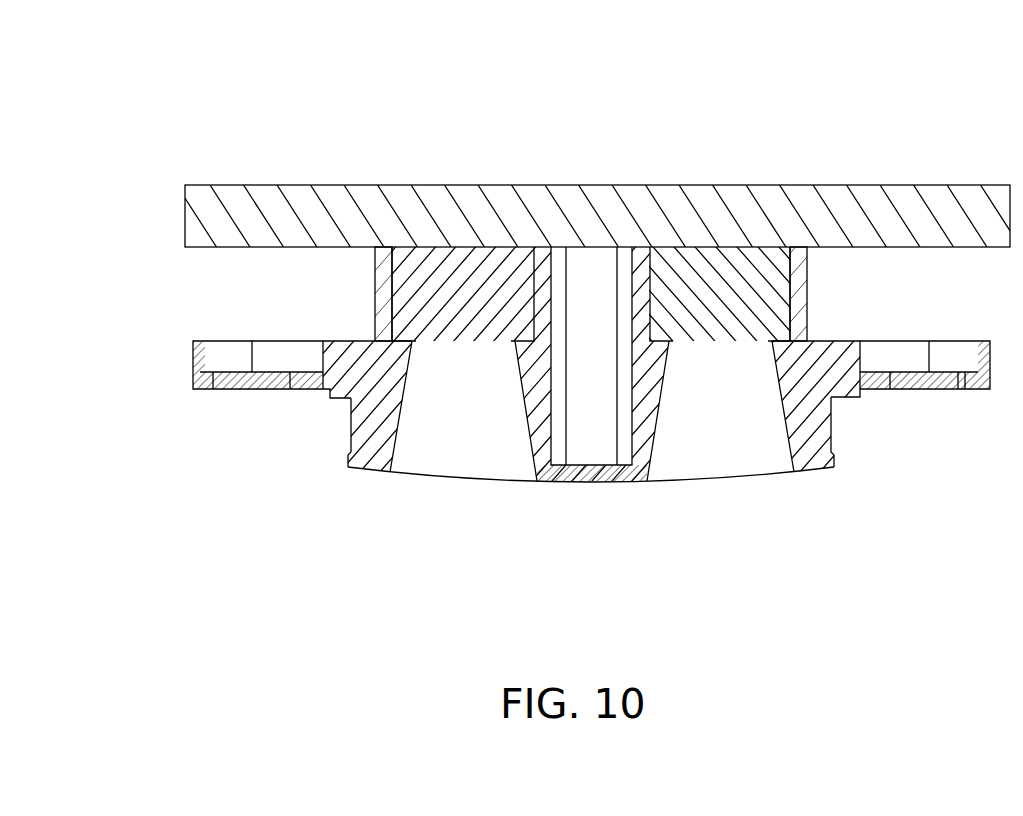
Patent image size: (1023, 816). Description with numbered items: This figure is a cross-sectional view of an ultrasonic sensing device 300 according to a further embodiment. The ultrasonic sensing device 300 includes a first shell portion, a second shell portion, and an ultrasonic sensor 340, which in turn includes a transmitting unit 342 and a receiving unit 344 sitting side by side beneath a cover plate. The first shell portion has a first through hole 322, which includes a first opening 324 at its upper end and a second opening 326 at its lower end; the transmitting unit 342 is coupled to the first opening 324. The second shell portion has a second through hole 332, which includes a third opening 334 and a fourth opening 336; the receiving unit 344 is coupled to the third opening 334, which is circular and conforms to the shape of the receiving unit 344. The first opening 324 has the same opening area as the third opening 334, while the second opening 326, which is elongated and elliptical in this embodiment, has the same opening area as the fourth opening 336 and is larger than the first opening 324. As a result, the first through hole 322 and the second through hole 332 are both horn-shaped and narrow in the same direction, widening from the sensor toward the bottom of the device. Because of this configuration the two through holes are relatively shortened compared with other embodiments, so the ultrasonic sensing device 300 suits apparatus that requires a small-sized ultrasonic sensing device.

The ultrasonic sensing device 300 is at (164, 69).
The ultrasonic sensor 340 is at (752, 112).
The transmitting unit 342 is at (720, 283).
The receiving unit 344 is at (467, 290).
The fourth opening 336 is at (423, 472).
The third opening 334 is at (468, 341).
The second through hole 332 is at (452, 455).
The second opening 326 is at (681, 478).
The first opening 324 is at (727, 341).
The first through hole 322 is at (726, 447).